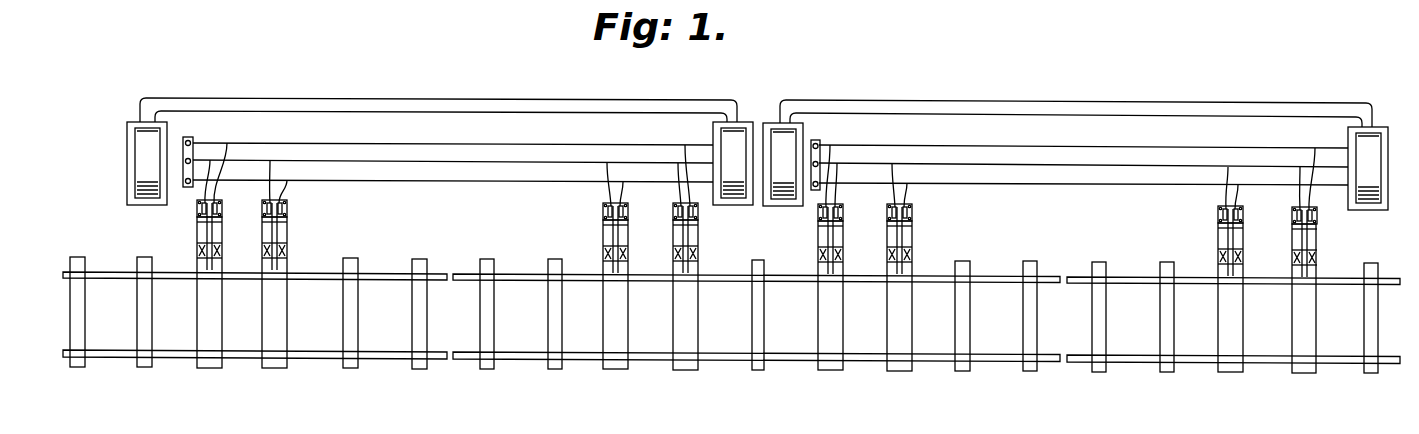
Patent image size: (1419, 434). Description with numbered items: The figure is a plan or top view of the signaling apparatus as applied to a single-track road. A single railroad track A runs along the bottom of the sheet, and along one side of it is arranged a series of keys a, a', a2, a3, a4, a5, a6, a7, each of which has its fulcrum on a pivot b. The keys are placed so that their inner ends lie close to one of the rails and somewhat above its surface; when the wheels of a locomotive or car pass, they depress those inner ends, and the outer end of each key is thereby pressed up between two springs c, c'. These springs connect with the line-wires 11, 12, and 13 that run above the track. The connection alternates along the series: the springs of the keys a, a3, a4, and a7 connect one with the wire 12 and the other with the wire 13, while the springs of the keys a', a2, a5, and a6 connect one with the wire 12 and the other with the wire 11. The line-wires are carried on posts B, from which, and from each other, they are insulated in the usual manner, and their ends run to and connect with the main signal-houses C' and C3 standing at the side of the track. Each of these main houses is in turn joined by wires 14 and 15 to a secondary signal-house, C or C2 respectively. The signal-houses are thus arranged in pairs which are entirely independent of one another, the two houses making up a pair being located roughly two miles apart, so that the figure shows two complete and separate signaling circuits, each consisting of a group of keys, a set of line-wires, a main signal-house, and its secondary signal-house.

The line-wire 11 is at (770, 179).
The line-wire 12 is at (770, 159).
The line-wire 13 is at (770, 140).
The wire 14 is at (758, 116).
The wire 15 is at (756, 106).
The single railroad track A is at (731, 315).
The posts B is at (507, 156).
The secondary signal-house C is at (147, 163).
The signal-house C' is at (733, 163).
The secondary signal-house C2 is at (783, 164).
The signal-house C3 is at (1368, 168).
The key a is at (215, 255).
The key a' is at (281, 264).
The key a2 is at (624, 266).
The key a3 is at (694, 257).
The key a4 is at (839, 257).
The key a5 is at (908, 267).
The key a6 is at (1239, 269).
The key a7 is at (1312, 260).
The pivot b is at (536, 253).
The spring c is at (537, 214).
The spring c' is at (575, 214).